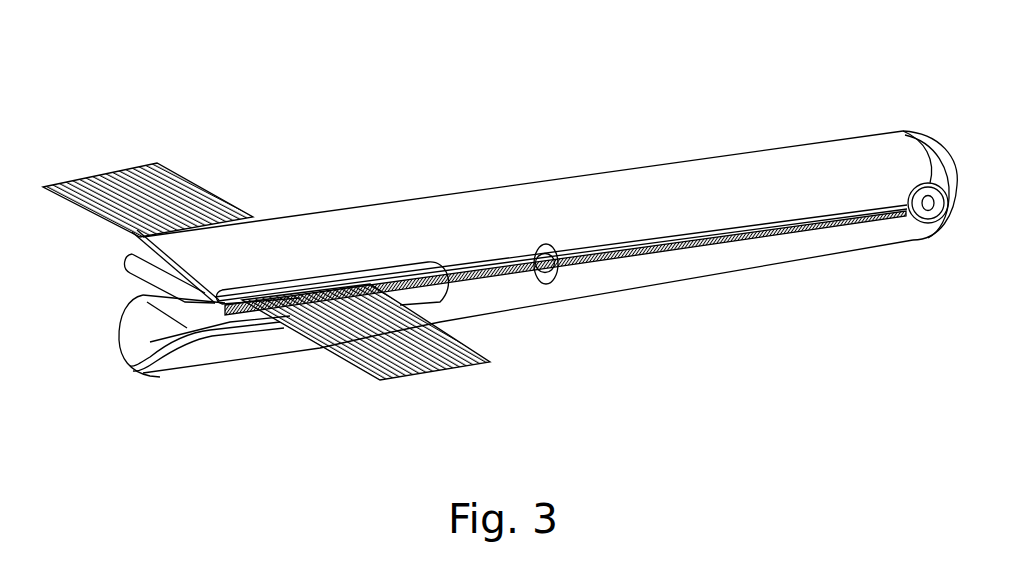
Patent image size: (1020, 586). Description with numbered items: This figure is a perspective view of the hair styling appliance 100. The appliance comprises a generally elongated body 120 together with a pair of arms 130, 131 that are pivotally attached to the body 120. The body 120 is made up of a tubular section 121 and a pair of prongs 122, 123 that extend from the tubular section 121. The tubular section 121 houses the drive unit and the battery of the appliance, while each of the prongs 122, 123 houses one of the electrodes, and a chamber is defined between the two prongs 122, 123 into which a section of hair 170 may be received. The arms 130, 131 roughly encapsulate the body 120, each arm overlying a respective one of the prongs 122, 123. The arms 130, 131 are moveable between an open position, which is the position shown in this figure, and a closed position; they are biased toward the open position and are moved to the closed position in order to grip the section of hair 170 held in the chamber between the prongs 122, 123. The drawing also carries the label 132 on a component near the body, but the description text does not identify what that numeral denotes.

The hair styling appliance 100 is at (828, 64).
The body 120 is at (488, 268).
The tubular section 121 is at (578, 258).
The prong 122 is at (143, 260).
The prong 123 is at (140, 340).
The arm 130 is at (687, 170).
The arm 131 is at (686, 284).
The tube bracket 132 is at (337, 280).
The section of hair 170 is at (436, 373).